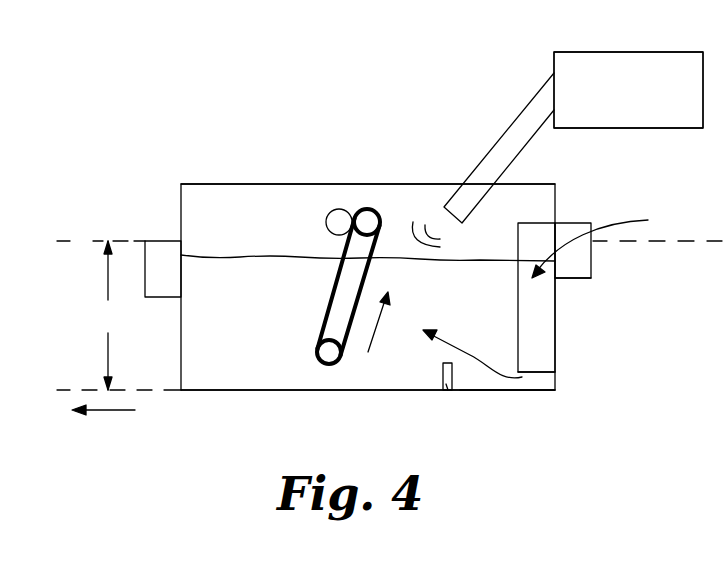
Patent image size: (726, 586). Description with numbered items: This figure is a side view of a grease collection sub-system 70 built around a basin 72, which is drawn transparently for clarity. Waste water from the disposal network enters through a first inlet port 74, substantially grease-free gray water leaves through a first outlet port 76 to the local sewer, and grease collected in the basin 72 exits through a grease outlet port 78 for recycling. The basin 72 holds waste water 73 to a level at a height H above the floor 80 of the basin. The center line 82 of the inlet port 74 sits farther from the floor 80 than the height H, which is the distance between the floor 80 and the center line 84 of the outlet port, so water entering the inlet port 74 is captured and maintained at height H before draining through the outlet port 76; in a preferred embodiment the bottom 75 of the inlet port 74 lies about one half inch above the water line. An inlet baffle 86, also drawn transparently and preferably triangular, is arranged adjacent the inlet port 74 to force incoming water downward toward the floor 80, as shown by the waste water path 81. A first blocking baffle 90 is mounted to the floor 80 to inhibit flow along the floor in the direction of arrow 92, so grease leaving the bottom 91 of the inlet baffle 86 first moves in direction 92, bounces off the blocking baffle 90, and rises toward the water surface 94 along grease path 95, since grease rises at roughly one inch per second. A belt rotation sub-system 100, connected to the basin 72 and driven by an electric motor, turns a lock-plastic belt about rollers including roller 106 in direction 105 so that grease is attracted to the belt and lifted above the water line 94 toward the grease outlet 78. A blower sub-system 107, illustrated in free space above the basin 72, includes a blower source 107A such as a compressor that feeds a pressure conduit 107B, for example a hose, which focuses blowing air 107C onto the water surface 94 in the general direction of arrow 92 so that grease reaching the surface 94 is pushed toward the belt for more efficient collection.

The grease collection sub-system 70 is at (386, 131).
The basin 72 is at (277, 184).
The waste water 73 is at (368, 287).
The first inlet port 74 is at (573, 223).
The bottom of the inlet port 75 is at (573, 279).
The first outlet port 76 is at (165, 240).
The grease outlet port 78 is at (326, 221).
The floor of the basin 80 is at (515, 393).
The waste water path 81 is at (606, 242).
The center line of the inlet port 82 is at (670, 243).
The center line of the outlet port 84 is at (80, 240).
The inlet baffle 86 is at (537, 325).
The first blocking baffle 90 is at (445, 382).
The bottom of the baffle 91 is at (538, 372).
The arrow 92 is at (108, 412).
The water surface 94 is at (207, 256).
The grease path 95 is at (447, 343).
The belt rotation sub-system 100 is at (288, 377).
The direction of belt rotation 105 is at (373, 322).
The roller 106 is at (330, 354).
The blower sub-system 107 is at (539, 44).
The blower source 107A is at (630, 128).
The pressure conduit 107B is at (522, 147).
The blowing air 107C is at (425, 254).
The height H is at (119, 315).